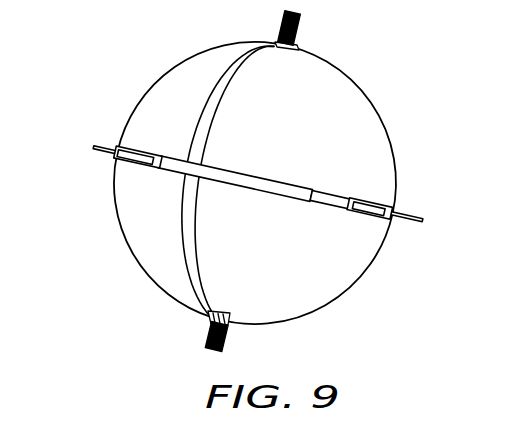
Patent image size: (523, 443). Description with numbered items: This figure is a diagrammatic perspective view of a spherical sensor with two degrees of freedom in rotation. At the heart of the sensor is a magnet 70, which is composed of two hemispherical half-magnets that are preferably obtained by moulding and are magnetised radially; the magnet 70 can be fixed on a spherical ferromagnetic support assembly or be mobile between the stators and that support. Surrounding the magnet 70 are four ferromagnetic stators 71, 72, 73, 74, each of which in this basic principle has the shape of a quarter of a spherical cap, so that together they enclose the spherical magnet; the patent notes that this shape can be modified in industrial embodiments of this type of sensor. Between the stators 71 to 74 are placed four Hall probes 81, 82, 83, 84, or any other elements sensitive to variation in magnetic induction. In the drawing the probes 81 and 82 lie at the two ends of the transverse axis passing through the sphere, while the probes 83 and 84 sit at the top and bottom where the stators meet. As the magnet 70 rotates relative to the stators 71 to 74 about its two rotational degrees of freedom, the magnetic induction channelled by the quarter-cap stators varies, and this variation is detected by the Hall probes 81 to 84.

The magnet 70 is at (263, 181).
The ferromagnetic stator 71 is at (166, 95).
The ferromagnetic stator 72 is at (340, 77).
The ferromagnetic stator 73 is at (343, 280).
The ferromagnetic stator 74 is at (130, 250).
The Hall probe 81 is at (122, 166).
The Hall probe 82 is at (382, 208).
The Hall probe 83 is at (281, 25).
The Hall probe 84 is at (227, 341).